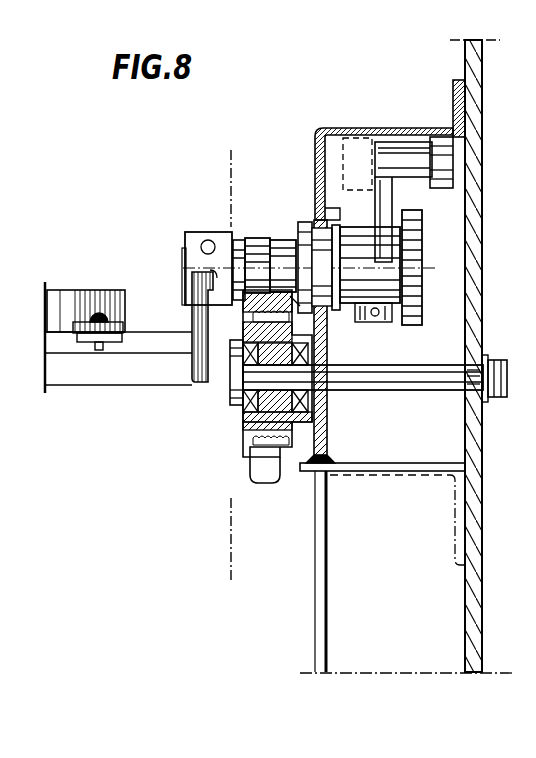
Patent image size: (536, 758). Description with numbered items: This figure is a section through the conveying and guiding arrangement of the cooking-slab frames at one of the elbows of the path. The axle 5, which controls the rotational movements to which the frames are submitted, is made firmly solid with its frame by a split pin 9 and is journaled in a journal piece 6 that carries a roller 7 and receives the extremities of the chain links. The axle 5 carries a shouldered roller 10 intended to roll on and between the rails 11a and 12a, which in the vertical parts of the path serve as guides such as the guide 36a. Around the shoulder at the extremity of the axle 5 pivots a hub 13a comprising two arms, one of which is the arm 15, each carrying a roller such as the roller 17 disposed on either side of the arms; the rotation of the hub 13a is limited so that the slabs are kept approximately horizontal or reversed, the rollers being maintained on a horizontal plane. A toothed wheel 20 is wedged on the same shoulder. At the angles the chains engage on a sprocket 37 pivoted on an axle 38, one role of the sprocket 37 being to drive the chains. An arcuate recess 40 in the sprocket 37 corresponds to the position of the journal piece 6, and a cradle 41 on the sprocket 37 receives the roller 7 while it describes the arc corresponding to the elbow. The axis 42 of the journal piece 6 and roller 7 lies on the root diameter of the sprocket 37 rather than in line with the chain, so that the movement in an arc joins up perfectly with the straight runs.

The axle 5 is at (190, 275).
The journal piece 6 is at (262, 250).
The roller 7 is at (287, 253).
The split pin 9 is at (231, 165).
The shouldered roller 10 is at (315, 217).
The rail 11a is at (322, 430).
The rail 12a is at (320, 133).
The hub 13a is at (372, 282).
The arm 15 is at (385, 195).
The roller 17 is at (447, 152).
The toothed wheel 20 is at (413, 247).
The guide 36a is at (322, 603).
The sprocket 37 is at (260, 418).
The axle 38 is at (438, 375).
The arcuate recess 40 is at (235, 293).
The cradle 41 is at (300, 304).
The axis 42 is at (217, 232).